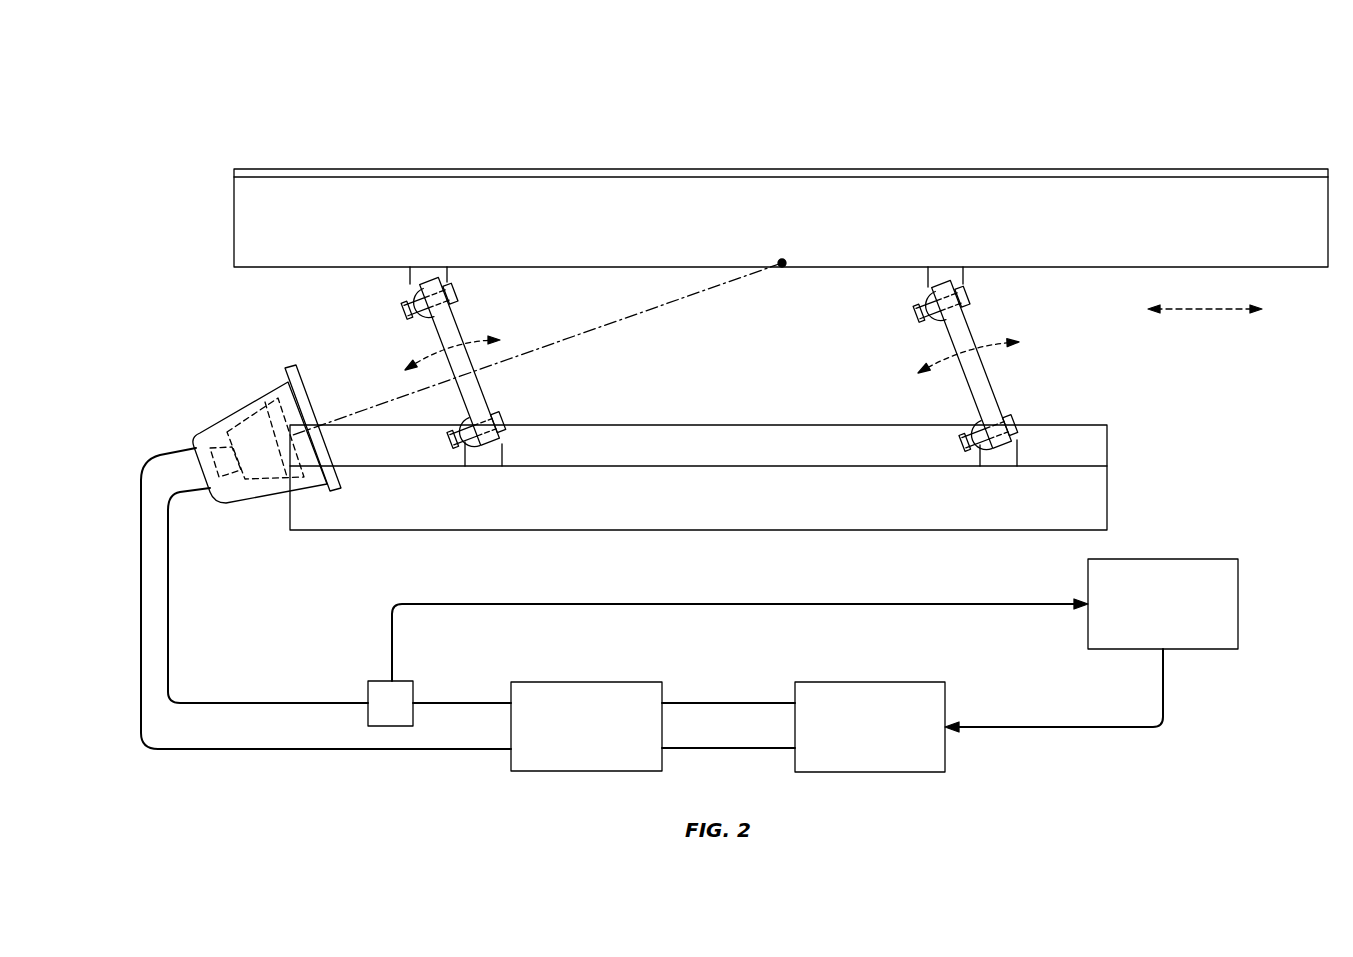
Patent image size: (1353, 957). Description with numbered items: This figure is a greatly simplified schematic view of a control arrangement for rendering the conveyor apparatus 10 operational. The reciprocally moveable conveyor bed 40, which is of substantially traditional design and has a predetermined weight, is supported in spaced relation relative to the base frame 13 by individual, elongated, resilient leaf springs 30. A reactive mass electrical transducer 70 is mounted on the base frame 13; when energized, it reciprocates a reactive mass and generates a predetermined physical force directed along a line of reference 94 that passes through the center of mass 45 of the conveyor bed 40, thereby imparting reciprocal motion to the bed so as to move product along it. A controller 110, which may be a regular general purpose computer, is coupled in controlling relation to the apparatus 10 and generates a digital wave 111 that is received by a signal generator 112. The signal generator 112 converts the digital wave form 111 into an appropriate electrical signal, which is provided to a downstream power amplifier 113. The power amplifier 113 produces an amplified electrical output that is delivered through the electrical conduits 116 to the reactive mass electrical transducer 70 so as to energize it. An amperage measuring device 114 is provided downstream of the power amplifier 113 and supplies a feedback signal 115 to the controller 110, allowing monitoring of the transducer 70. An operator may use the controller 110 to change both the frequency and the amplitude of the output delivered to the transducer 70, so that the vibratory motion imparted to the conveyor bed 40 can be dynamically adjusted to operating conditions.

The conveyor apparatus 10 is at (212, 122).
The base frame 13 is at (1110, 497).
The leaf springs 30 is at (438, 337).
The reciprocally moveable conveyor bed 40 is at (1072, 158).
The center of mass 45 is at (782, 263).
The reactive mass electrical transducer 70 is at (208, 403).
The line of reference 94 is at (573, 337).
The controller 110 is at (1198, 649).
The digital wave 111 is at (1048, 727).
The signal generator 112 is at (870, 772).
The power amplifier 113 is at (587, 771).
The amperage measuring device 114 is at (403, 680).
The feedback signal 115 is at (745, 603).
The electrical conduits 116 is at (142, 622).